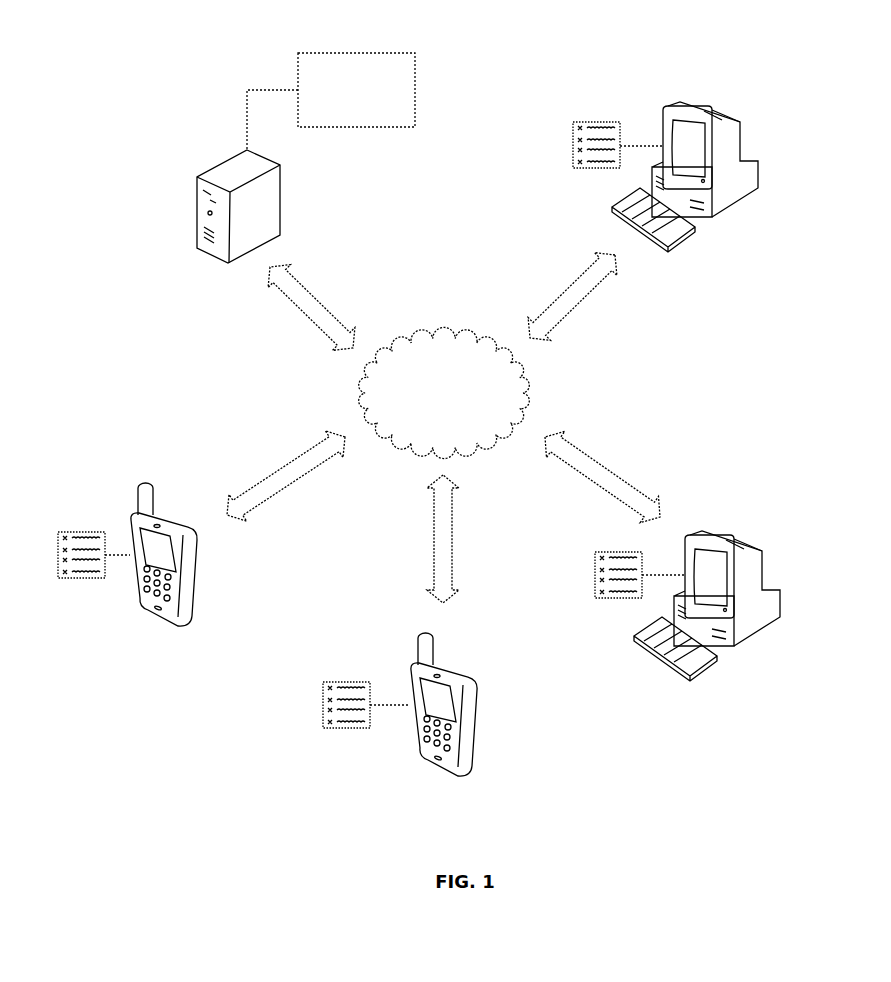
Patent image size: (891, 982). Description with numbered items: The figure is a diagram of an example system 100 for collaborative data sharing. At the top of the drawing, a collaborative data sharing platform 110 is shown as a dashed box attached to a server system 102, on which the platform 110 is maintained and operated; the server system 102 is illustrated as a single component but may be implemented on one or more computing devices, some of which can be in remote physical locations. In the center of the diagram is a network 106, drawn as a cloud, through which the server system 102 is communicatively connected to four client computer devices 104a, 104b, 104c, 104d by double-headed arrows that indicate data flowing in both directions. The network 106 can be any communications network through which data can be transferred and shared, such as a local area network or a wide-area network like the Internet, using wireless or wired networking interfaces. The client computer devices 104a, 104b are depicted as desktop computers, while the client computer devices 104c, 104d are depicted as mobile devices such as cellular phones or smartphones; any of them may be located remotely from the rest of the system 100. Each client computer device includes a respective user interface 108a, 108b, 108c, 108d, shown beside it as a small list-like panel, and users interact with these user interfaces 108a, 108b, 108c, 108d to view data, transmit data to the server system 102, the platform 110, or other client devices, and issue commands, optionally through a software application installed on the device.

The system for collaborative data sharing 100 is at (157, 123).
The server system 102 is at (262, 205).
The client computer device 104a is at (733, 140).
The client computer device 104b is at (753, 570).
The client computer device 104c is at (465, 727).
The client computer device 104d is at (187, 577).
The network 106 is at (429, 416).
The user interface 108a is at (587, 122).
The user interface 108b is at (608, 552).
The user interface 108c is at (338, 682).
The user interface 108d is at (73, 532).
The collaborative data sharing platform 110 is at (343, 110).